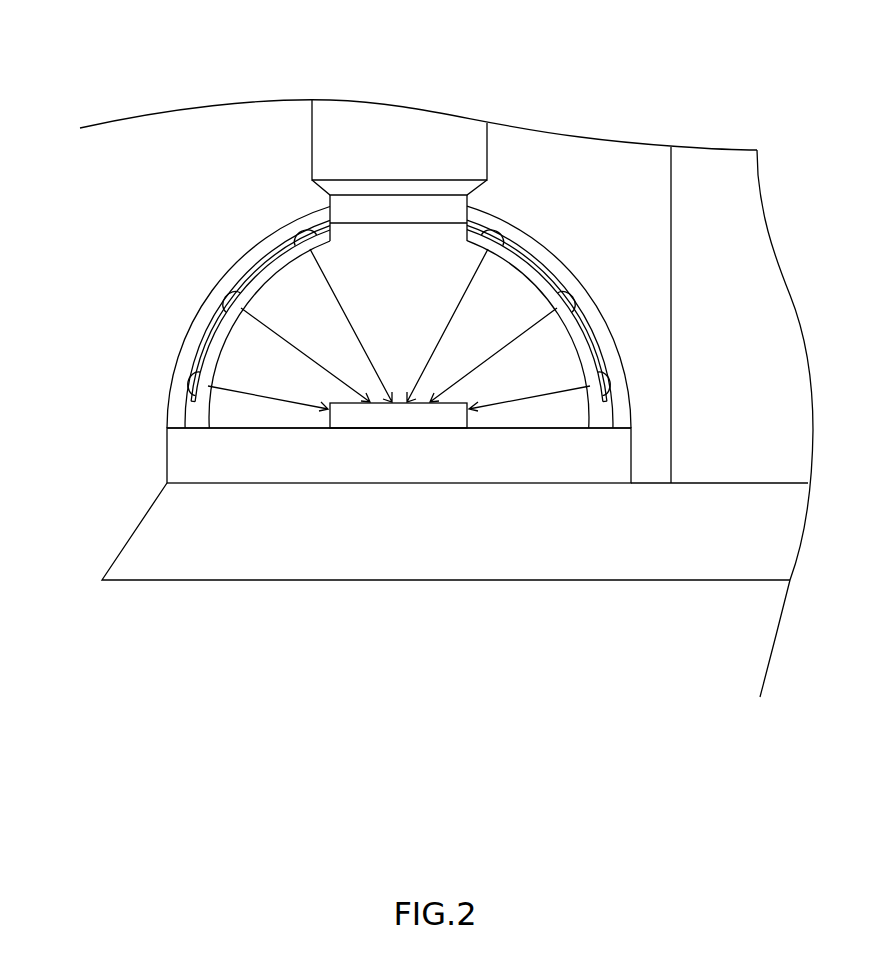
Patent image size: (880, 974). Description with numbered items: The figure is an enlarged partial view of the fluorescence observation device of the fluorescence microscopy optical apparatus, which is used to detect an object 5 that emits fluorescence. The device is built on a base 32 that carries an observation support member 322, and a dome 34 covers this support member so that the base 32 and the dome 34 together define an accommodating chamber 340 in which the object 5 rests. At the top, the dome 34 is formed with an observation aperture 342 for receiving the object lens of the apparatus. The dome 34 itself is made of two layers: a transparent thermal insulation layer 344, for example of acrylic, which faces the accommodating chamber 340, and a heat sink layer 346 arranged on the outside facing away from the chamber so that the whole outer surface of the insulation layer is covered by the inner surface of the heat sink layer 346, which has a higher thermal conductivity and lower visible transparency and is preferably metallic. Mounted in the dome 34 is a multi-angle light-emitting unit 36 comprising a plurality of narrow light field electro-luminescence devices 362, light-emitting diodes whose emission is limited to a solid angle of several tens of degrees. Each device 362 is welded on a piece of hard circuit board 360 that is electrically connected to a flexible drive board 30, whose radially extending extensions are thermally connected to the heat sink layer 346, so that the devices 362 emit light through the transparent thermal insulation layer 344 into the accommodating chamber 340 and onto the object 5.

The object 5 is at (457, 422).
The flexible drive board 30 is at (205, 340).
The base 32 is at (432, 472).
The observation support member 322 is at (390, 430).
The dome 34 is at (590, 165).
The accommodating chamber 340 is at (258, 415).
The observation aperture 342 is at (470, 187).
The transparent thermal insulation layer 344 is at (195, 420).
The heat sink layer 346 is at (177, 388).
The multi-angle light-emitting unit 36 is at (257, 182).
The hard circuit board 360 is at (287, 232).
The narrow light field electro-luminescence device 362 is at (257, 260).